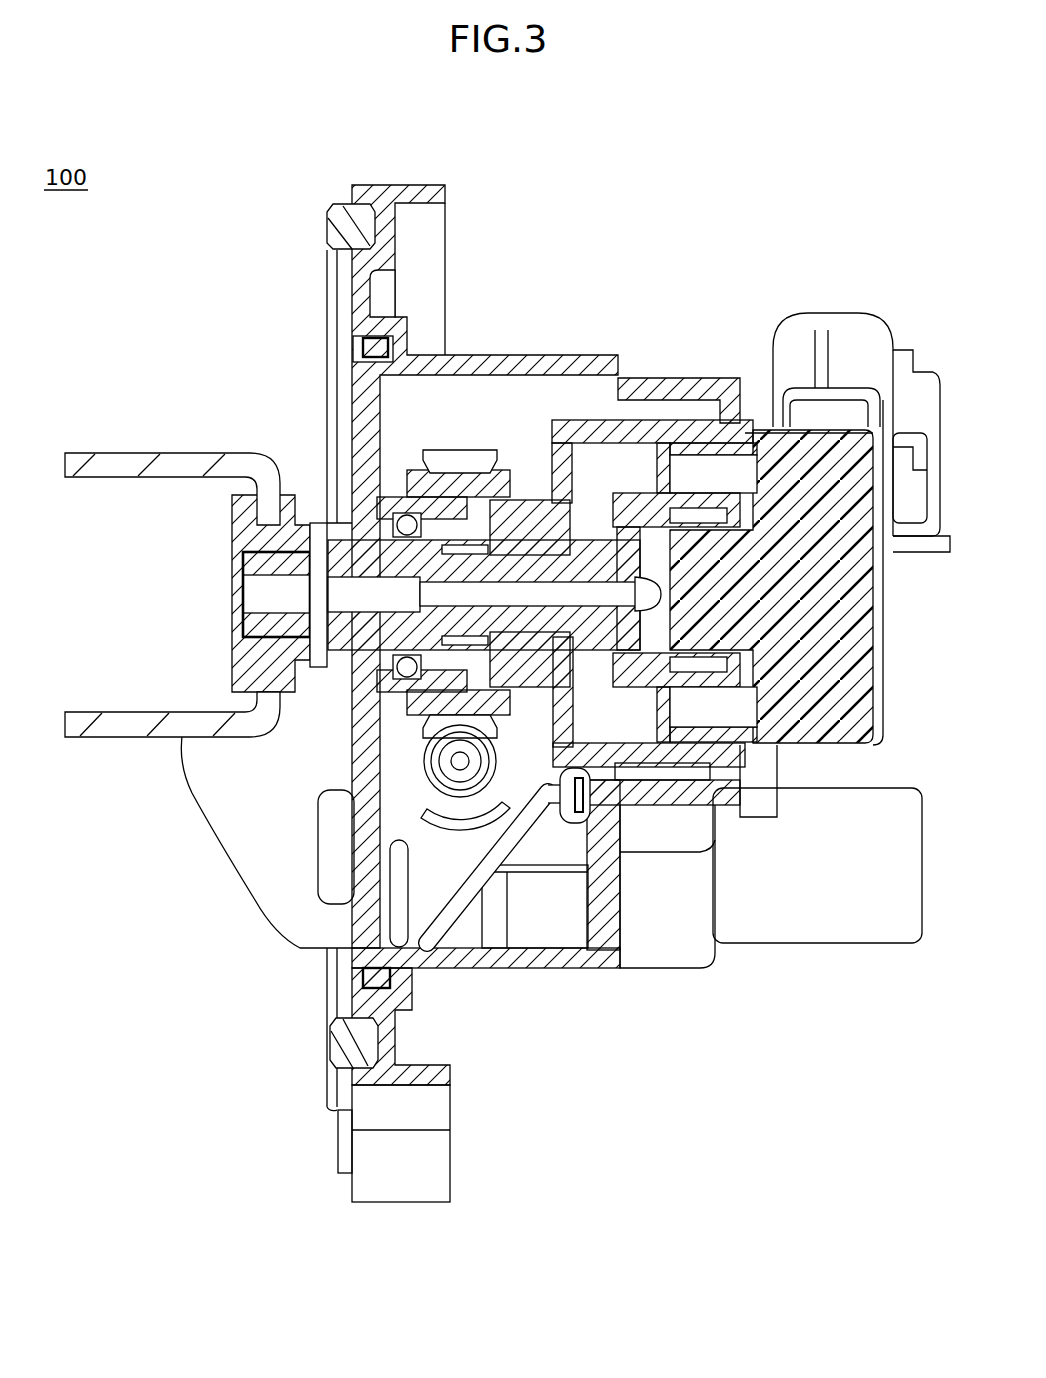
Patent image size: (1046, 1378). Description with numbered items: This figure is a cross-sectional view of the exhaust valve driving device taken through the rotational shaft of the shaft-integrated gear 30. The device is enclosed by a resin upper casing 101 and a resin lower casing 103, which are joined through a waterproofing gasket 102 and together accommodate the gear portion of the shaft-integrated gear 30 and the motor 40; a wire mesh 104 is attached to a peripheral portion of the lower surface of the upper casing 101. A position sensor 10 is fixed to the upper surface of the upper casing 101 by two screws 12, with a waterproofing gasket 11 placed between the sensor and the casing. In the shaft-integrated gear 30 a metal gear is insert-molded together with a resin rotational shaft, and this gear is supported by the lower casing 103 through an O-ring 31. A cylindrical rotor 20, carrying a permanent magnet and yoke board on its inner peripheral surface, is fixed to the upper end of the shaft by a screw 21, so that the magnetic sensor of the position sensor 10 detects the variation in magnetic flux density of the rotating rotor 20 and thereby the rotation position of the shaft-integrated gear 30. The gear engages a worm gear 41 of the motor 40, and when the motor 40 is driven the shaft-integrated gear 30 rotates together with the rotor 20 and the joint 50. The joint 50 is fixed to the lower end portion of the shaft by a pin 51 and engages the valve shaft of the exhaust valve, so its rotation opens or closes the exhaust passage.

The position sensor 10 is at (878, 648).
The gasket 11 is at (722, 440).
The screws 12 is at (785, 808).
The rotor 20 is at (680, 450).
The screw 21 is at (597, 560).
The shaft-integrated gear 30 is at (462, 452).
The O-ring 31 is at (401, 497).
The motor 40 is at (405, 795).
The worm gear 41 is at (424, 768).
The joint 50 is at (130, 452).
The pin 51 is at (323, 522).
The upper casing 101 is at (562, 355).
The gasket 102 is at (363, 346).
The lower casing 103 is at (252, 890).
The wire mesh 104 is at (330, 226).